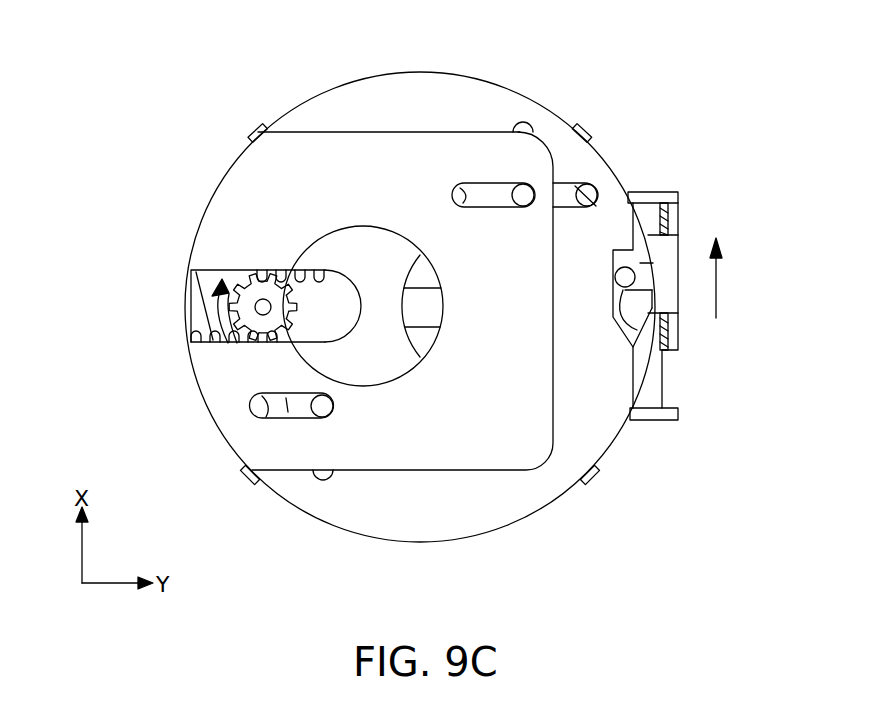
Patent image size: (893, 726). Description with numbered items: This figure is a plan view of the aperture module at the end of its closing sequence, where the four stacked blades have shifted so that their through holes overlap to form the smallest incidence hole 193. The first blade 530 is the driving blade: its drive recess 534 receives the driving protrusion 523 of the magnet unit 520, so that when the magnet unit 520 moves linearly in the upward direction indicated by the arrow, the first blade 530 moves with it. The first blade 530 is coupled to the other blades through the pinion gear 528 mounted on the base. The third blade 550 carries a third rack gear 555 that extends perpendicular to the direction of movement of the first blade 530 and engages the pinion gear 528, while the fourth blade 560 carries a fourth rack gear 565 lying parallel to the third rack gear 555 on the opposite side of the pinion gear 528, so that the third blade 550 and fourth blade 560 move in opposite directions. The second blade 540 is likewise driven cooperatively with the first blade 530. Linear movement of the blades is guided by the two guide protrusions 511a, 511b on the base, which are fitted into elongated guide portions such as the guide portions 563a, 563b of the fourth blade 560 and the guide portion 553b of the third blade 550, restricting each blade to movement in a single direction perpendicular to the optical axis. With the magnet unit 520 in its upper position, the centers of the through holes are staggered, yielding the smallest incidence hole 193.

The smallest incidence hole 193 is at (416, 300).
The guide protrusion 511a is at (318, 416).
The guide protrusion 511b is at (533, 188).
The magnet unit 520 is at (693, 248).
The driving protrusion 523 is at (640, 337).
The pinion gear 528 is at (200, 300).
The first blade 530 is at (502, 92).
The drive recess 534 is at (652, 308).
The second blade 540 is at (515, 512).
The third blade 550 is at (578, 162).
The guide portion 553b is at (593, 190).
The third rack gear 555 is at (265, 272).
The fourth blade 560 is at (337, 150).
The guide portion 563a is at (250, 402).
The guide portion 563b is at (458, 188).
The fourth rack gear 565 is at (207, 337).